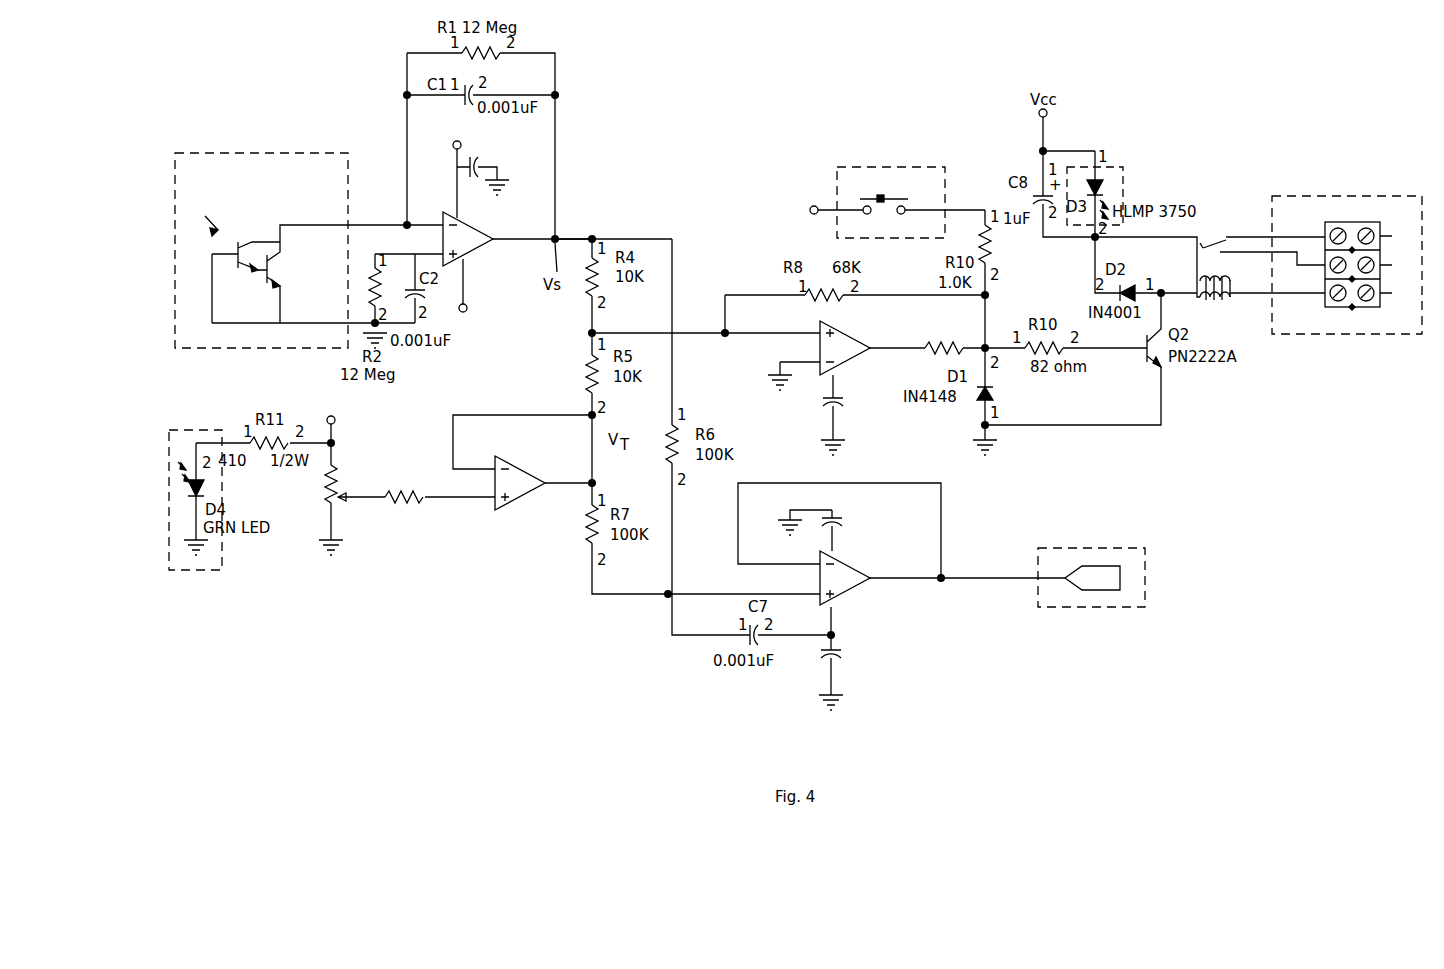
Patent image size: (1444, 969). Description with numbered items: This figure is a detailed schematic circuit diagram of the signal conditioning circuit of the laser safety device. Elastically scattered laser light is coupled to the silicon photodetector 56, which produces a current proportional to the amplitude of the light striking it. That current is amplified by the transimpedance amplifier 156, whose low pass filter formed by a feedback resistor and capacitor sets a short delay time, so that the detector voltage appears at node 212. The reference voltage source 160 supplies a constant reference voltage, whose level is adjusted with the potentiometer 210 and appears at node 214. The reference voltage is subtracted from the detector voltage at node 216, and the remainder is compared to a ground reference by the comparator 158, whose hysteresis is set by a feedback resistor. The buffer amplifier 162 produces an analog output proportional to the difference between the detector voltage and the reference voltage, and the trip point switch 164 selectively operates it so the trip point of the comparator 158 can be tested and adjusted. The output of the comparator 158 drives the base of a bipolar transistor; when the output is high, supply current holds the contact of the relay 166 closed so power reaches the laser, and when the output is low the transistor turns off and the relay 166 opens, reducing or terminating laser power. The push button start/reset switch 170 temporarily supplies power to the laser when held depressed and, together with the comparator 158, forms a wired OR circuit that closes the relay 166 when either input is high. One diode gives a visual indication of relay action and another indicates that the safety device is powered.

The silicon photodetector 56 is at (240, 153).
The transimpedance amplifier 156 is at (497, 281).
The comparator 158 is at (810, 383).
The reference voltage source 160 is at (522, 507).
The buffer amplifier 162 is at (850, 613).
The trip point switch 164 is at (1145, 590).
The relay 166 is at (1233, 312).
The start/reset switch 170 is at (858, 167).
The potentiometer 210 is at (308, 520).
The node 212 is at (563, 225).
The node 214 is at (596, 490).
The node 216 is at (706, 315).